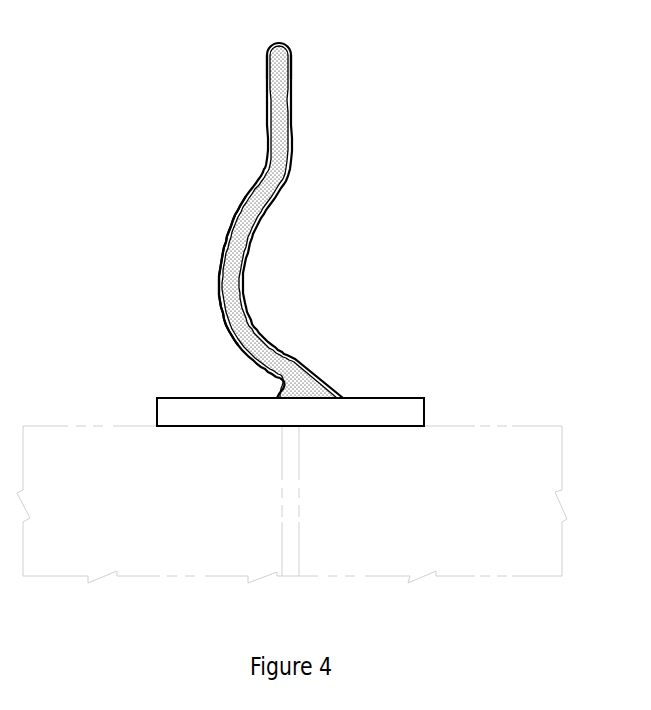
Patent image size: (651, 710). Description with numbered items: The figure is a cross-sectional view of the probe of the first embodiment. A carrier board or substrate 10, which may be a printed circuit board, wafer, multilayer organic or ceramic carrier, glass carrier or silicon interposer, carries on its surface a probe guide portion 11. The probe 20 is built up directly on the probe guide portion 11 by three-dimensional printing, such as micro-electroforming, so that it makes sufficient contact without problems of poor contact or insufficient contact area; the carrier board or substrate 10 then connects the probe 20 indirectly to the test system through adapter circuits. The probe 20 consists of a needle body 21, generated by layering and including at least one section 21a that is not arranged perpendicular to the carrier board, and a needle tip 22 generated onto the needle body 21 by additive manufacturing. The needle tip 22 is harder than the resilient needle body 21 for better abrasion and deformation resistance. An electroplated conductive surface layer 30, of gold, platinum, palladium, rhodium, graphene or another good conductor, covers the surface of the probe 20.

The carrier board or substrate 10 is at (537, 426).
The probe guide portion 11 is at (400, 397).
The probe 20 is at (271, 203).
The needle body 21 is at (267, 213).
The section not arranged perpendicular to the carrier board 21a is at (198, 195).
The needle tip 22 is at (268, 72).
The surface layer 30 is at (267, 145).